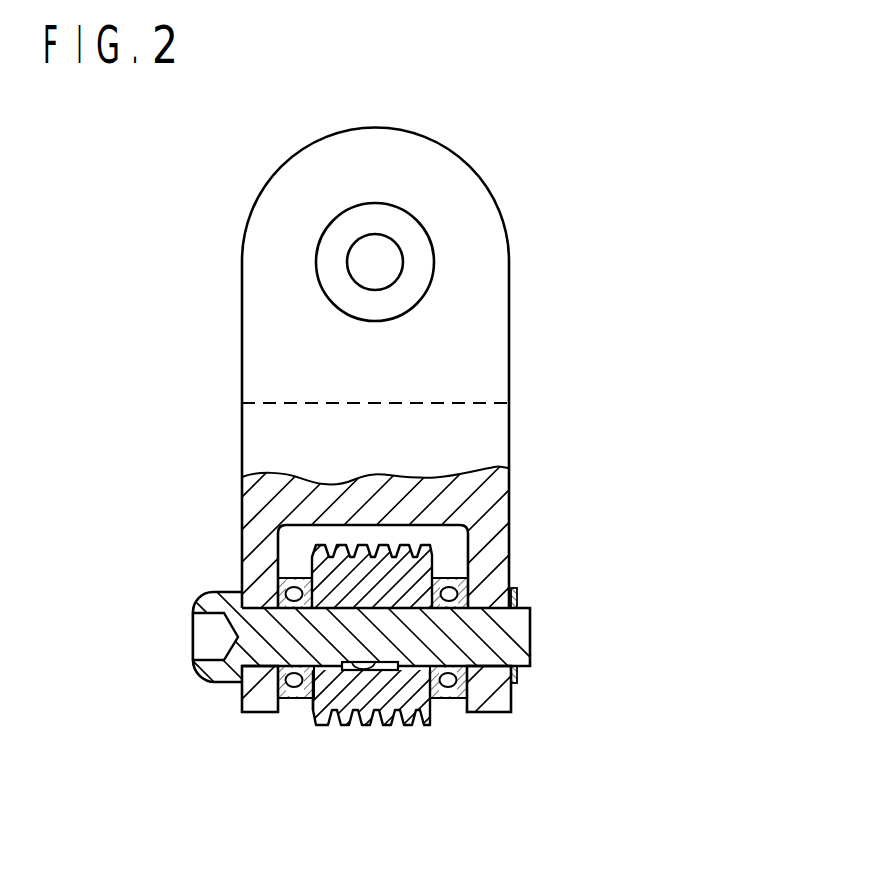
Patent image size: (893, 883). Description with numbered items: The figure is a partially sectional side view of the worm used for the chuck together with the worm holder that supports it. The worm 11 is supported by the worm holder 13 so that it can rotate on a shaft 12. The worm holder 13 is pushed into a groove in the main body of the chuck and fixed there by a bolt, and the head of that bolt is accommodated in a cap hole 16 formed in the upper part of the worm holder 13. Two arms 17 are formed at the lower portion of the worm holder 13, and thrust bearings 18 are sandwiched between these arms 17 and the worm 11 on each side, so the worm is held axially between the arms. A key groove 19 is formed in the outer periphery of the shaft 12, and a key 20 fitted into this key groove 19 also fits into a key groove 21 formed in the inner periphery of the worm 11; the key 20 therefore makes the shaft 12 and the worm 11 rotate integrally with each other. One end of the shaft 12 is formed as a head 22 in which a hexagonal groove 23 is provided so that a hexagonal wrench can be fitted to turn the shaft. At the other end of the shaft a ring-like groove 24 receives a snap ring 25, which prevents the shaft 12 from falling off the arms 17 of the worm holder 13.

The worm 11 is at (355, 727).
The shaft 12 is at (527, 633).
The worm holder 13 is at (485, 323).
The cap hole 16 is at (408, 227).
The arms 17 is at (243, 705).
The thrust bearings 18 is at (289, 698).
The key groove 19 is at (373, 657).
The key 20 is at (383, 672).
The key groove 21 is at (316, 672).
The head 22 is at (207, 592).
The hexagonal groove 23 is at (202, 640).
The ring-like groove 24 is at (520, 598).
The snap ring 25 is at (518, 673).